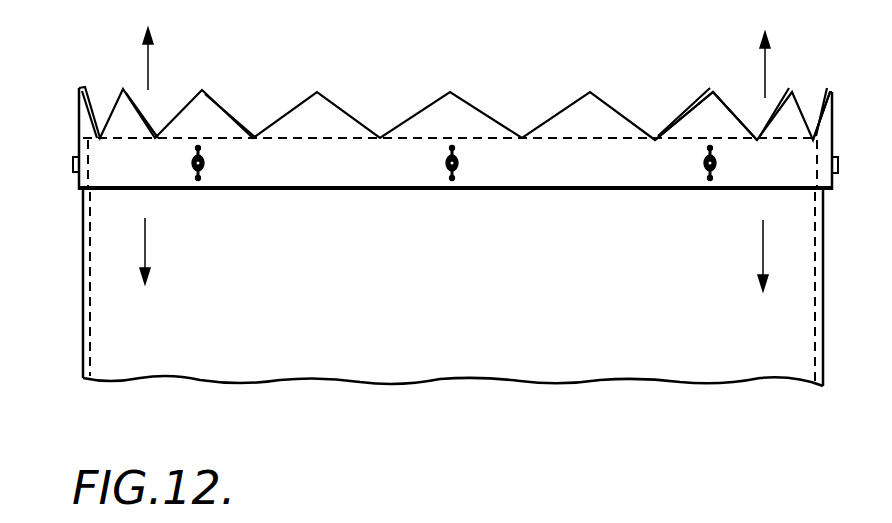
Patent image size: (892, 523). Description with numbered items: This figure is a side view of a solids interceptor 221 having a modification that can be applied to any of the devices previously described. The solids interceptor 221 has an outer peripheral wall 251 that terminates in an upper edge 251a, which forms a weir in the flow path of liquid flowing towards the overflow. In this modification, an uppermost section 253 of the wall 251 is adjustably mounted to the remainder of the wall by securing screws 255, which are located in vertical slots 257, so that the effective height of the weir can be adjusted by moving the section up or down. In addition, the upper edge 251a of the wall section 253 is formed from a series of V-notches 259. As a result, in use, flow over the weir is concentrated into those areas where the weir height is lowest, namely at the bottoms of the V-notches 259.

The solids interceptor 221 is at (72, 336).
The outer peripheral wall 251 is at (82, 268).
The upper edge 251a is at (830, 91).
The uppermost section 253 is at (777, 170).
The securing screws 255 is at (702, 170).
The vertical slots 257 is at (452, 190).
The V-notches 259 is at (378, 137).